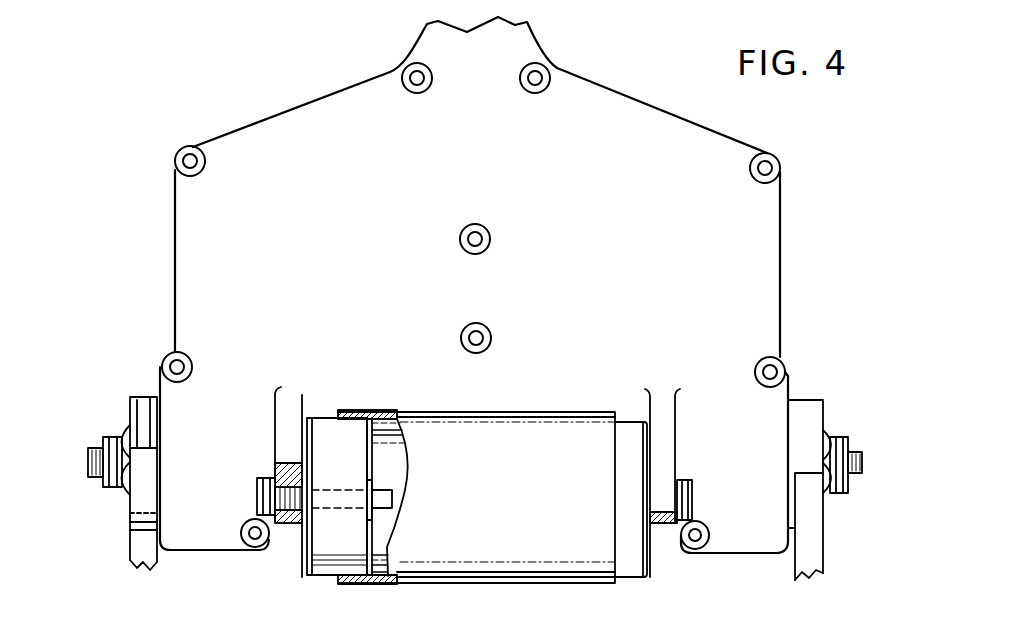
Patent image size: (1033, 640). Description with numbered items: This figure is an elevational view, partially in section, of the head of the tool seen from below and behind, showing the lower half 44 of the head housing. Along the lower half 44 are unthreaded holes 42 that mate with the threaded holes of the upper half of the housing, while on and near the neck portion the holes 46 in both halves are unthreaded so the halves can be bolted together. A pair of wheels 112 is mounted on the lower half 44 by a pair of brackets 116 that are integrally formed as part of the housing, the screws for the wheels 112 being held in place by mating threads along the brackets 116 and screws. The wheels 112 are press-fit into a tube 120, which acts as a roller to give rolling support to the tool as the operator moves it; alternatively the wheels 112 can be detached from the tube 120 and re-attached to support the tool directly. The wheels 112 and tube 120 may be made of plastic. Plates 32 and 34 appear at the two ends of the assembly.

The left support plate 32 is at (135, 552).
The right support plate 34 is at (813, 545).
The unthreaded holes 42 is at (462, 238).
The lower half 44 is at (770, 205).
The holes 46 is at (548, 72).
The wheels 112 is at (333, 438).
The brackets 116 is at (287, 427).
The tube 120 is at (513, 427).